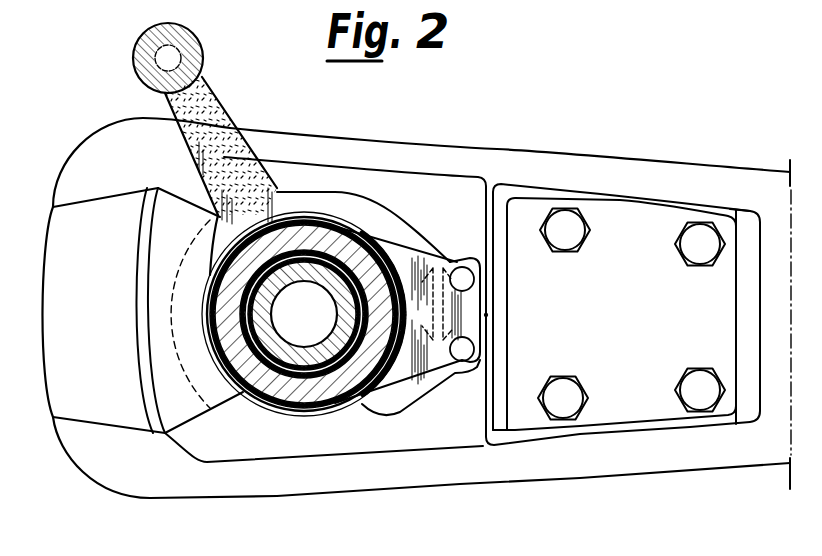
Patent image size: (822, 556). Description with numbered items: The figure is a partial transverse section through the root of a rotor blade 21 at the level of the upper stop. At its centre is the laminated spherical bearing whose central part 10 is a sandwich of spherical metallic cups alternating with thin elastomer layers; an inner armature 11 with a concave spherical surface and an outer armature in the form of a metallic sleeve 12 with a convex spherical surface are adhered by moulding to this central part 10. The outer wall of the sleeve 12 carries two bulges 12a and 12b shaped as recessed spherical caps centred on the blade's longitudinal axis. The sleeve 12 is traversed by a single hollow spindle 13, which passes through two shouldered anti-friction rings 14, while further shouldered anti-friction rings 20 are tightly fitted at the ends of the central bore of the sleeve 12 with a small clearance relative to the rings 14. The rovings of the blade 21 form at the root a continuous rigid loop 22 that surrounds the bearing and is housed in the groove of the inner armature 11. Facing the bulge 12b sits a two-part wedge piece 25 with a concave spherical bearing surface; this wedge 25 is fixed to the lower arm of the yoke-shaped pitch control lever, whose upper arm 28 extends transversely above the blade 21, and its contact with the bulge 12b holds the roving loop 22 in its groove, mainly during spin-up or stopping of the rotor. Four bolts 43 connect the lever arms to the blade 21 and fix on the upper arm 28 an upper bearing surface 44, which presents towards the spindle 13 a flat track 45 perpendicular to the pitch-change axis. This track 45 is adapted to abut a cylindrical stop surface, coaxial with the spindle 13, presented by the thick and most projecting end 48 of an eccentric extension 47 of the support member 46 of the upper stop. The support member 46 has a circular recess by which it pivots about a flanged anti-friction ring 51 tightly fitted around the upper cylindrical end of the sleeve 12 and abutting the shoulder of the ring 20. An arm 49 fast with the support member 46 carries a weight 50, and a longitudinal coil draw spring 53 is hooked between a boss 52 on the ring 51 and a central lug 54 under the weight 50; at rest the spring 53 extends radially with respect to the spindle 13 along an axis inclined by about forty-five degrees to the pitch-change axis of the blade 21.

The central part 10 is at (158, 283).
The inner armature 11 is at (70, 348).
The sleeve 12 is at (349, 213).
The bulge 12a is at (235, 406).
The bulge 12b is at (375, 416).
The spindle 13 is at (287, 363).
The shouldered anti-friction rings 14 is at (307, 372).
The shouldered anti-friction rings 20 is at (328, 376).
The blade 21 is at (741, 165).
The roving loop 22 is at (477, 164).
The wedge piece 25 is at (468, 368).
The upper arm 28 is at (748, 396).
The bolts 43 is at (571, 222).
The upper bearing surface 44 is at (500, 422).
The track 45 is at (497, 417).
The support member 46 is at (376, 244).
The eccentric extension 47 is at (438, 265).
The end 48 is at (487, 316).
The arm 49 is at (250, 128).
The weight 50 is at (187, 50).
The flanged anti-friction ring 51 is at (327, 225).
The boss 52 is at (208, 226).
The coil draw spring 53 is at (187, 140).
The central lug 54 is at (140, 63).